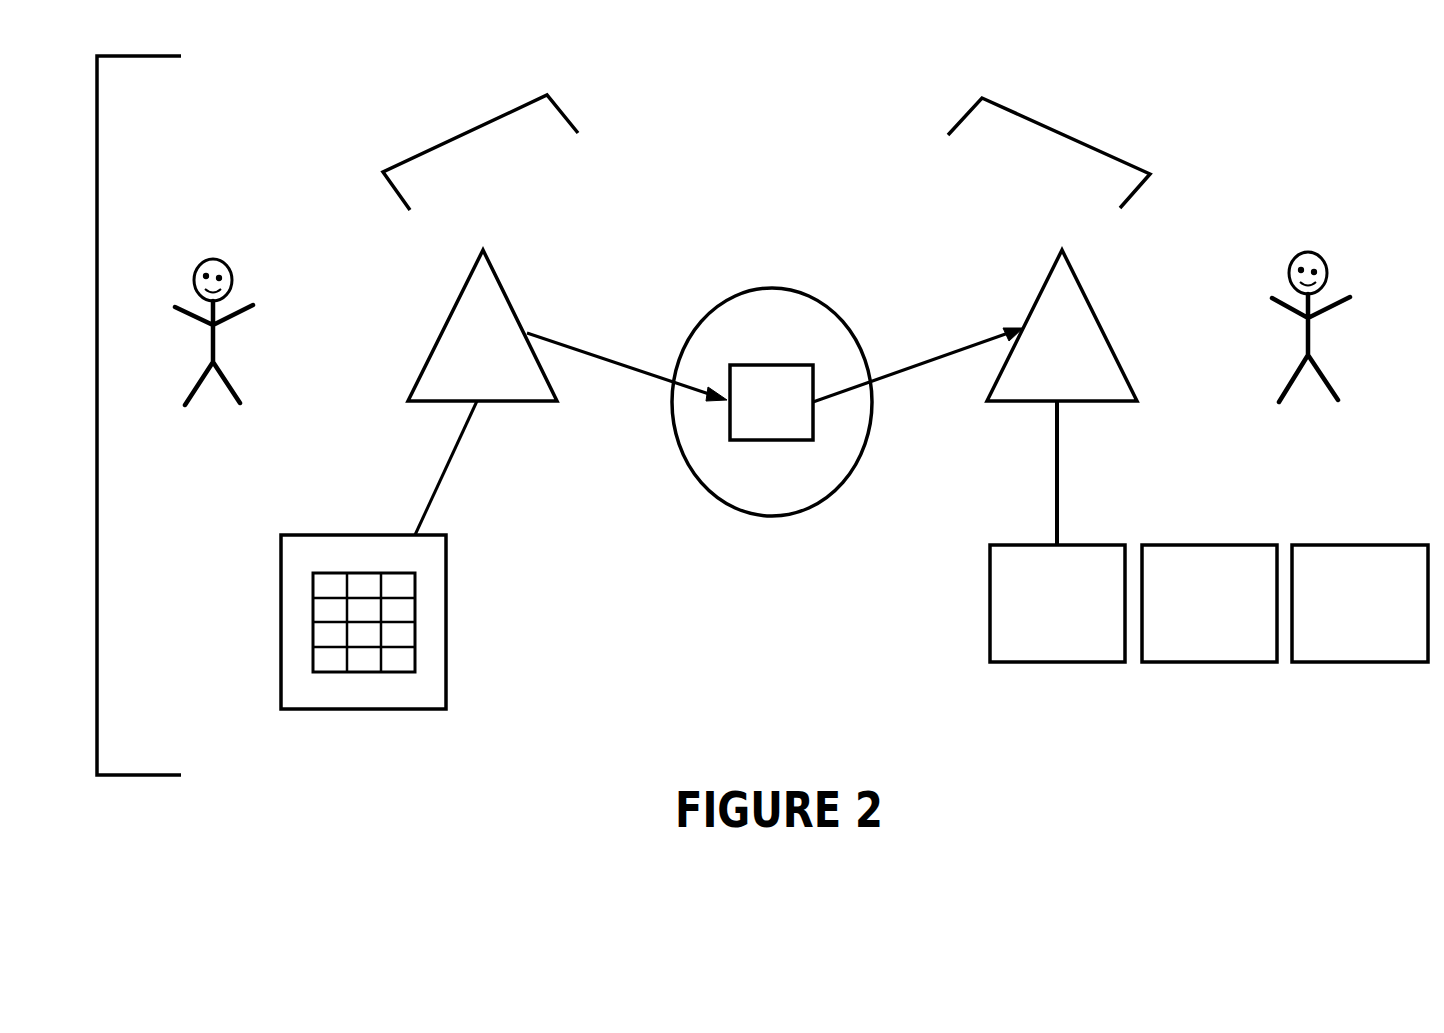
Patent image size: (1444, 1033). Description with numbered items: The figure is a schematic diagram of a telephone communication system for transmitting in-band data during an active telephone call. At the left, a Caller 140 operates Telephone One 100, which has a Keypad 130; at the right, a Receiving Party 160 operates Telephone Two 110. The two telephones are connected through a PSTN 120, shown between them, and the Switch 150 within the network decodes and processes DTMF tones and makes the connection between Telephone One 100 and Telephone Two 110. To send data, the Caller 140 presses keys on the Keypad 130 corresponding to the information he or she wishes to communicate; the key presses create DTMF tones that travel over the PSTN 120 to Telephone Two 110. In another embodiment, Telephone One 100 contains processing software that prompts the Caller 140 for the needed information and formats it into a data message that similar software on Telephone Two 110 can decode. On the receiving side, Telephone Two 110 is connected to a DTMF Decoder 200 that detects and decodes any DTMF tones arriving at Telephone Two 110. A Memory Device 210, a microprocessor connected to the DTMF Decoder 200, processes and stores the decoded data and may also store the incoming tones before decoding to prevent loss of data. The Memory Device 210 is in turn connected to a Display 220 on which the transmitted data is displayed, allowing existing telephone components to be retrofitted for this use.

The Telephone One 100 is at (460, 302).
The Telephone Two 110 is at (1083, 292).
The PSTN 120 is at (763, 517).
The Keypad 130 is at (270, 670).
The Caller 140 is at (197, 327).
The Switch 150 is at (813, 440).
The Receiving Party 160 is at (1317, 327).
The DTMF Decoder 200 is at (1058, 662).
The Memory Device 210 is at (1210, 662).
The Display 220 is at (1362, 662).